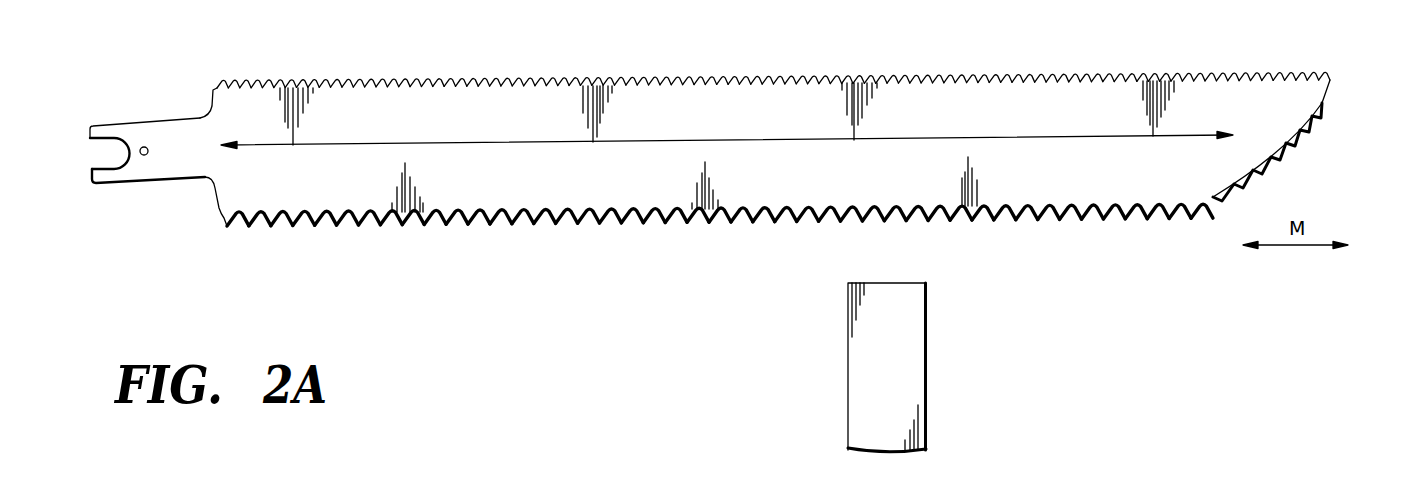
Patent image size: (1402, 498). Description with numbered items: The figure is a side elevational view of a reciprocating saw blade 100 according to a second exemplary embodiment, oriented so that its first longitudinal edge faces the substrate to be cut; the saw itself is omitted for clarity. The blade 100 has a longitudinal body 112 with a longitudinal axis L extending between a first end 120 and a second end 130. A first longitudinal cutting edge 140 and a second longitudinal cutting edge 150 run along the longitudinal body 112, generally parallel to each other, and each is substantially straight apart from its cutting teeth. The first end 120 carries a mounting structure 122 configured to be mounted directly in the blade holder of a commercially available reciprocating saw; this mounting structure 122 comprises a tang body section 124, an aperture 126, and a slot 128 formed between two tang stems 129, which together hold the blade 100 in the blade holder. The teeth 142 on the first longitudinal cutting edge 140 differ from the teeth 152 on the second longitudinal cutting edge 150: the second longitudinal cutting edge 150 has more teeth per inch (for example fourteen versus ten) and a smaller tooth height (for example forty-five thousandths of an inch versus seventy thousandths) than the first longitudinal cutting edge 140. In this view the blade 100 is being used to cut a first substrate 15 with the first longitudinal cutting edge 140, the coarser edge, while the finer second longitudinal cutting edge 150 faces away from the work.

The reciprocating saw blade 100 is at (1147, 39).
The longitudinal body 112 is at (1133, 174).
The first end 120 is at (180, 145).
The mounting structure 122 is at (205, 71).
The tang body section 124 is at (131, 139).
The aperture 126 is at (147, 156).
The slot 128 is at (129, 151).
The tang stems 129 is at (101, 183).
The second end 130 is at (1270, 115).
The first longitudinal cutting edge 140 is at (670, 216).
The teeth 142 is at (812, 213).
The second longitudinal cutting edge 150 is at (805, 77).
The teeth 152 is at (988, 78).
The first substrate 15 is at (897, 353).